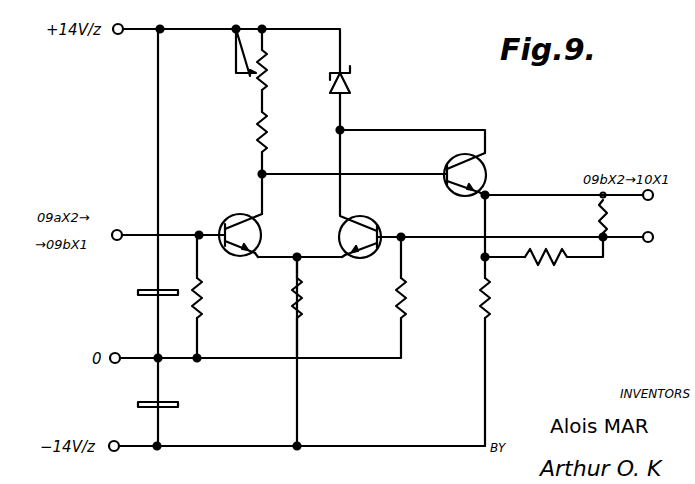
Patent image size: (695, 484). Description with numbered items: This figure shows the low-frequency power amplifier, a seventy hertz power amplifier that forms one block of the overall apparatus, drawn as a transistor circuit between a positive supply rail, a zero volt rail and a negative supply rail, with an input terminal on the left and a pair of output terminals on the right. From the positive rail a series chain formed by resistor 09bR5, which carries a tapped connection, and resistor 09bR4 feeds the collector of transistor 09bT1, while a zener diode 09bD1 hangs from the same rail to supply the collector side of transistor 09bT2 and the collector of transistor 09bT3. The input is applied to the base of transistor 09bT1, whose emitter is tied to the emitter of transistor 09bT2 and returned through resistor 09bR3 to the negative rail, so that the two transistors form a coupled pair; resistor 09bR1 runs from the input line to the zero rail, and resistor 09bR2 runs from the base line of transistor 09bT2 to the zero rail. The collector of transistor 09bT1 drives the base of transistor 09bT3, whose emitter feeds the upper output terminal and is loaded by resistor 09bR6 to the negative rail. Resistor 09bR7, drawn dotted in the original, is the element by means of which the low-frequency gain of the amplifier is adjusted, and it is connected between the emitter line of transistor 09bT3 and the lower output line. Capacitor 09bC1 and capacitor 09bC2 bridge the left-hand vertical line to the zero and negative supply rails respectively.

The resistor R5 (potentiometer) 09bR5 is at (256, 86).
The resistor R4 09bR4 is at (260, 136).
The zener diode D1 09bD1 is at (366, 98).
The transistor T1 09bT1 is at (234, 218).
The transistor T2 09bT2 is at (385, 210).
The transistor T3 09bT3 is at (478, 184).
The resistor R1 09bR1 is at (203, 306).
The resistor R3 09bR3 is at (302, 308).
The resistor R2 09bR2 is at (405, 312).
The resistor R6 09bR6 is at (504, 314).
The resistor 09bR7 is at (560, 260).
The capacitor C1 09bC1 is at (132, 288).
The capacitor C2 09bC2 is at (133, 400).